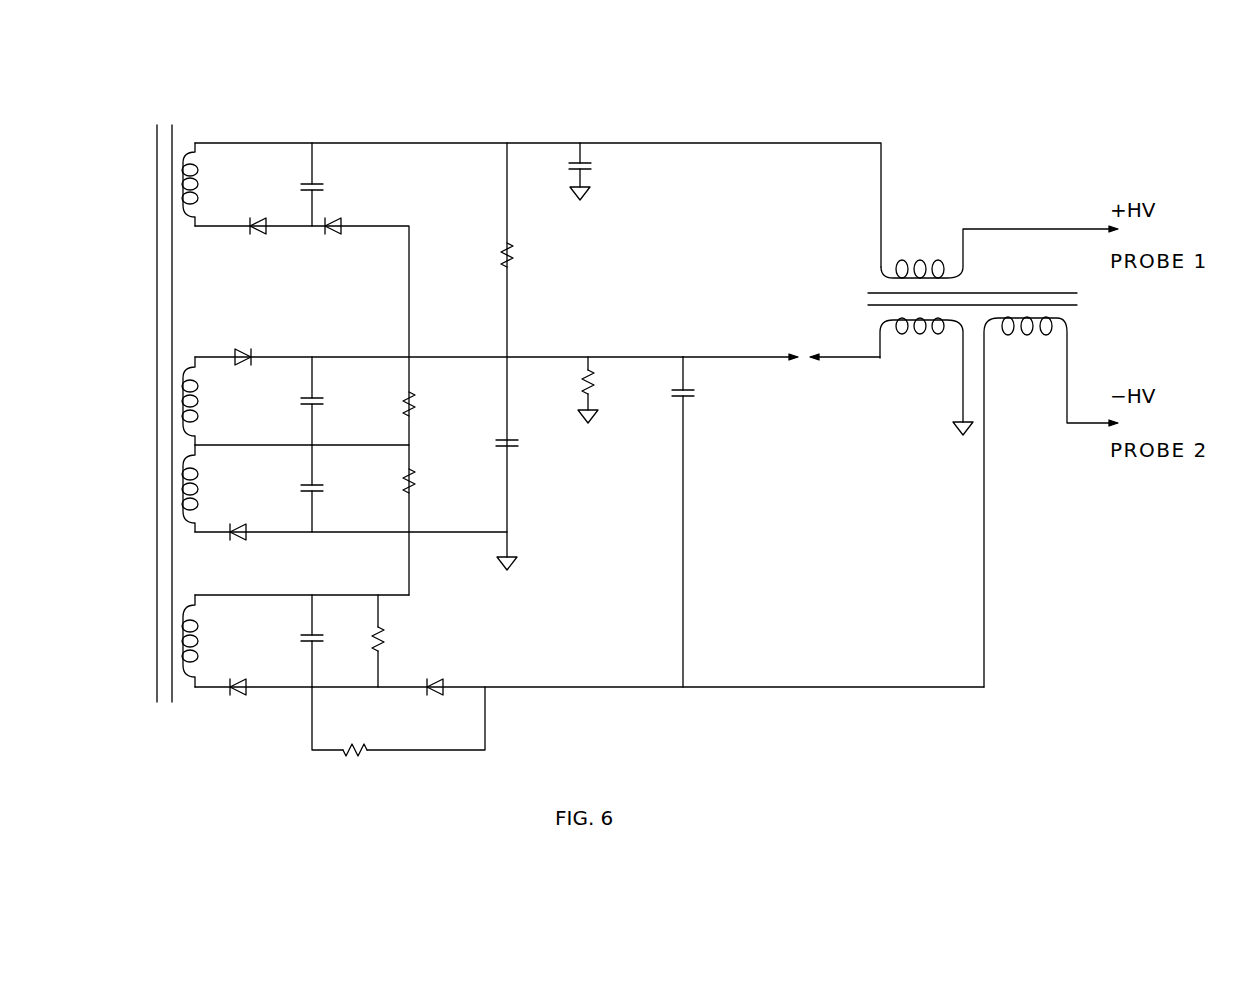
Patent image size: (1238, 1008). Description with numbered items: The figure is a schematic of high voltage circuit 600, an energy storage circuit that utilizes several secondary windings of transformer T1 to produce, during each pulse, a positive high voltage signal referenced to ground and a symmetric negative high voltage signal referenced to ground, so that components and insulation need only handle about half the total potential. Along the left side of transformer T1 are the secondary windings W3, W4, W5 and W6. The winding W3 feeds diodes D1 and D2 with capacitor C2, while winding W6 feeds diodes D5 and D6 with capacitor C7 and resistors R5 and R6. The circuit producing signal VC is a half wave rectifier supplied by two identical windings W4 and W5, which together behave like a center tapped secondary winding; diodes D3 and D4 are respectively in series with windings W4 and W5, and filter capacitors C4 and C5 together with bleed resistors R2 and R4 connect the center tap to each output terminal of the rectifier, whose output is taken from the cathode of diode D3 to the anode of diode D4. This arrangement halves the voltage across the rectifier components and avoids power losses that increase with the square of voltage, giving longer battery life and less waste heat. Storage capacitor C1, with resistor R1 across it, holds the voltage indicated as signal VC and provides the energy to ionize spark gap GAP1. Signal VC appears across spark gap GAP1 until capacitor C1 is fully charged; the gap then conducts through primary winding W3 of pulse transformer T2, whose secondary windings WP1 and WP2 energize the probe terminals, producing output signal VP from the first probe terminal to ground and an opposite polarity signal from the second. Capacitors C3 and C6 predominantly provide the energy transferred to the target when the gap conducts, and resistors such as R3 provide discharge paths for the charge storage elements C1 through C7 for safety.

The high voltage circuit 600 is at (345, 108).
The transformer T1 is at (170, 397).
The primary winding W3 is at (577, 289).
The winding W4 is at (212, 401).
The winding W5 is at (212, 488).
The winding W6 is at (212, 641).
The storage capacitor C1 is at (485, 446).
The capacitor C2 is at (298, 184).
The capacitor C3 is at (598, 171).
The filter capacitor C4 is at (295, 401).
The filter capacitor C5 is at (295, 488).
The capacitor C6 is at (664, 522).
The capacitor C7 is at (295, 641).
The diode D1 is at (264, 211).
The diode D2 is at (345, 211).
The diode D3 is at (246, 340).
The diode D4 is at (234, 519).
The diode D5 is at (232, 673).
The diode D6 is at (436, 674).
The resistor R1 is at (483, 255).
The bleed resistor R2 is at (391, 398).
The resistor R3 is at (570, 390).
The bleed resistor R4 is at (391, 480).
The resistor R5 is at (398, 641).
The resistor R6 is at (398, 721).
The signal VC is at (478, 339).
The output signal VP is at (1019, 206).
The spark gap GAP1 is at (781, 373).
The pulse transformer T2 is at (954, 298).
The secondary winding WP1 is at (999, 252).
The secondary winding WP2 is at (1051, 502).